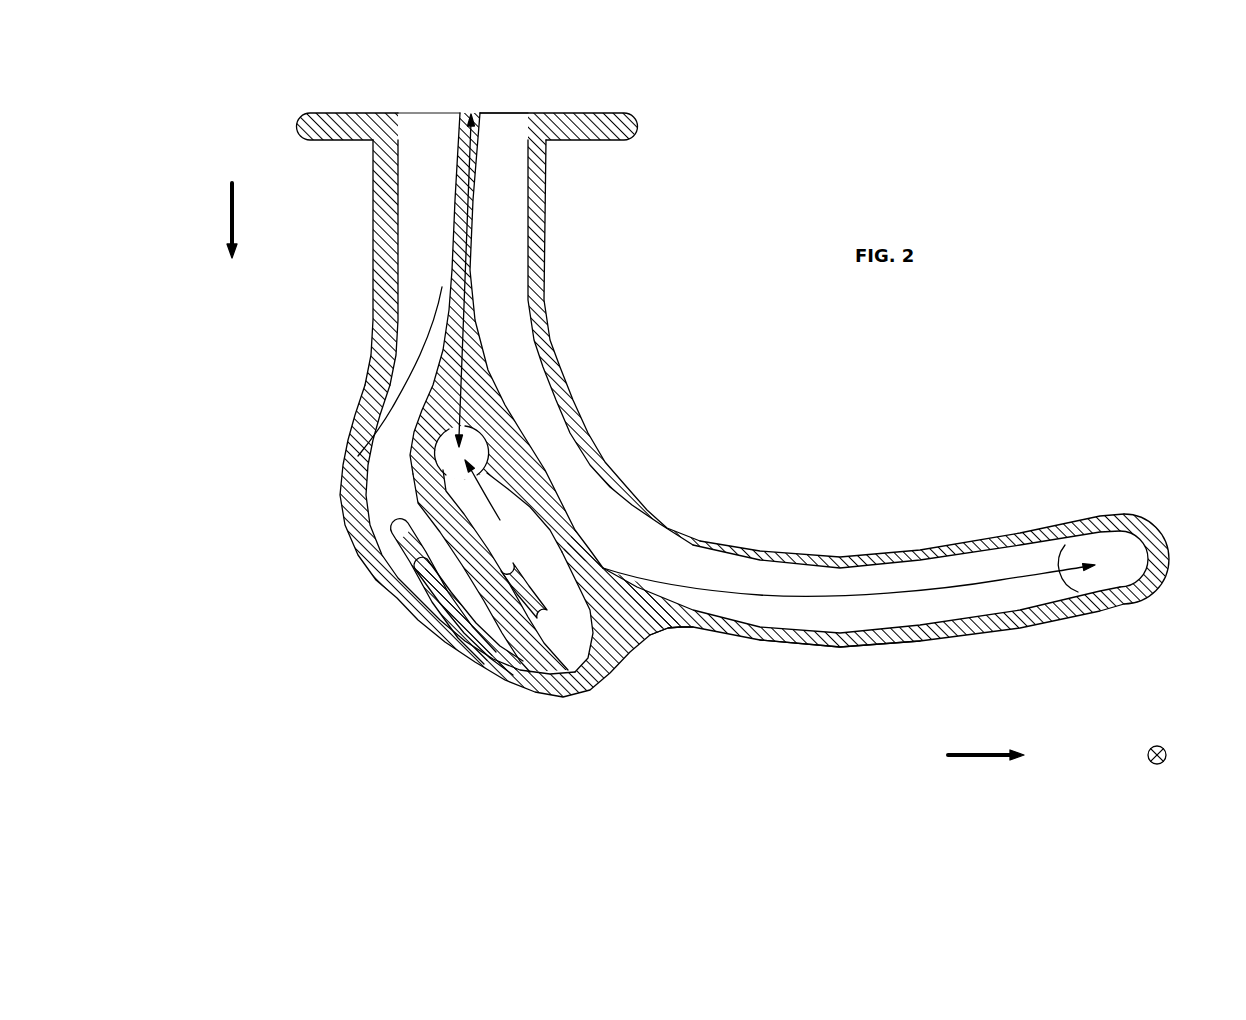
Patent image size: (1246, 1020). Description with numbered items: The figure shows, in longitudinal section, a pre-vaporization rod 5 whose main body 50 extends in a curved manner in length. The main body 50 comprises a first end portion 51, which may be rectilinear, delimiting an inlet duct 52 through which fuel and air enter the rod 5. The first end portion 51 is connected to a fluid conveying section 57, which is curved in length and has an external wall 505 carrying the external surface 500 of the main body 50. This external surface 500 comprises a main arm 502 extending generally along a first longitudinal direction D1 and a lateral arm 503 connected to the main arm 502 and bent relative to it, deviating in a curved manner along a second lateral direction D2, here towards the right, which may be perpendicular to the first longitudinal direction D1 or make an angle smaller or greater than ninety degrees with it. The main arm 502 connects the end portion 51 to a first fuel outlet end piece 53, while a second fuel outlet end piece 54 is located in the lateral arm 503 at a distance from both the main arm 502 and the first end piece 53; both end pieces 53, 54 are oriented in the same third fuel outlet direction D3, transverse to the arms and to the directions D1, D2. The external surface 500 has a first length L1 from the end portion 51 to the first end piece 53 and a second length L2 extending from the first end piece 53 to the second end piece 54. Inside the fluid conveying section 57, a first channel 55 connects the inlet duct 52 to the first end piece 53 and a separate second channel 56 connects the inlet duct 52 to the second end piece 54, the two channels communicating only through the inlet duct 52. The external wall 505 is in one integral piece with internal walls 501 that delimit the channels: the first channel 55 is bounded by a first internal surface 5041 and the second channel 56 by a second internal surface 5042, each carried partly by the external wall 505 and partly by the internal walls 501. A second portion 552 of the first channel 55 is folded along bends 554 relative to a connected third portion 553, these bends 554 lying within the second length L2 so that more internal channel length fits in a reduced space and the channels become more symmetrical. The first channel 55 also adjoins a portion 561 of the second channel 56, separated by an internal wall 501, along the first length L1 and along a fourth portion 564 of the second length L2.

The pre-vaporization rod 5 is at (761, 343).
The first end portion 51 is at (340, 121).
The inlet duct 52 is at (476, 92).
The main arm 502 is at (387, 186).
The external wall 505 is at (357, 452).
The first channel 55 is at (420, 216).
The internal wall 501 is at (470, 216).
The first length L1 is at (454, 266).
The first fuel outlet end piece 53 is at (448, 448).
The portion of the second channel 561 is at (500, 250).
The second internal surface 5042 is at (528, 329).
The second channel 56 is at (962, 571).
The second fuel outlet end piece 54 is at (1103, 553).
The lateral arm 503 is at (935, 636).
The external surface 500 is at (837, 647).
The second length L2 is at (870, 593).
The main body 50 is at (620, 610).
The bend 554 is at (567, 640).
The fluid conveying section 57 is at (424, 591).
The third portion 553 is at (480, 513).
The second portion 552 is at (412, 530).
The fourth portion 564 is at (423, 620).
The first internal surface 5041 is at (422, 563).
The first longitudinal direction D1 is at (209, 220).
The second lateral direction D2 is at (975, 755).
The third fuel outlet direction D3 is at (1166, 753).